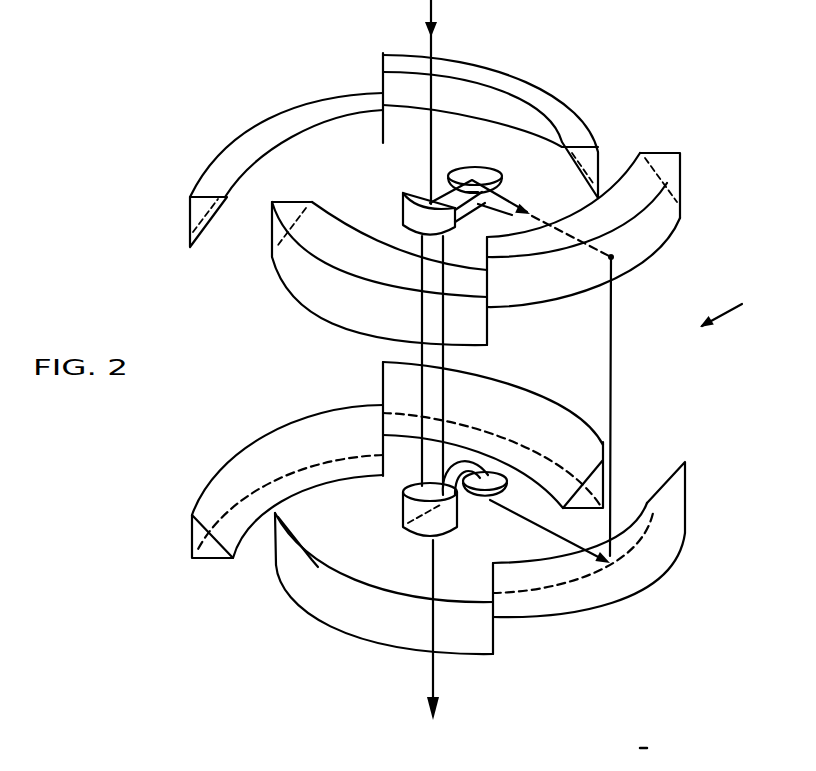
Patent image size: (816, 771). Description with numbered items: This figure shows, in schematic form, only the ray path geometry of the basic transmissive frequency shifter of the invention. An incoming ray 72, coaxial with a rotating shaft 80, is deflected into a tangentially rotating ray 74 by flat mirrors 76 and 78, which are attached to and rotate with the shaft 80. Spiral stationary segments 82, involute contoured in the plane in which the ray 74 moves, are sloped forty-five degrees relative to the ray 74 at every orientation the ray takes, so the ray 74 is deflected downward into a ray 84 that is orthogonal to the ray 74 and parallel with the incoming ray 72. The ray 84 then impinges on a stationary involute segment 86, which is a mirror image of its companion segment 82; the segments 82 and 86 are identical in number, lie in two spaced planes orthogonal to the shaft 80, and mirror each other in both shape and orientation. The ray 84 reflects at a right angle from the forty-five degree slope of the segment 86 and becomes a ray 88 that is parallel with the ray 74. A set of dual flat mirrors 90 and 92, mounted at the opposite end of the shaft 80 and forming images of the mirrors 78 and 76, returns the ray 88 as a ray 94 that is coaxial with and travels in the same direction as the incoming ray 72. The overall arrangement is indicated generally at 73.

The incoming ray 72 is at (436, 6).
The helical mixing element assembly 73 is at (735, 308).
The tangentially rotating ray 74 is at (554, 222).
The flat mirror 76 is at (403, 212).
The flat mirror 78 is at (466, 166).
The rotating shaft 80 is at (444, 395).
The spiral stationary segments 82 is at (381, 65).
The ray 84 is at (612, 405).
The stationary involute segment 86 is at (382, 381).
The ray 88 is at (553, 540).
The flat mirror 90 is at (475, 500).
The flat mirror 92 is at (405, 535).
The ray 94 is at (436, 673).